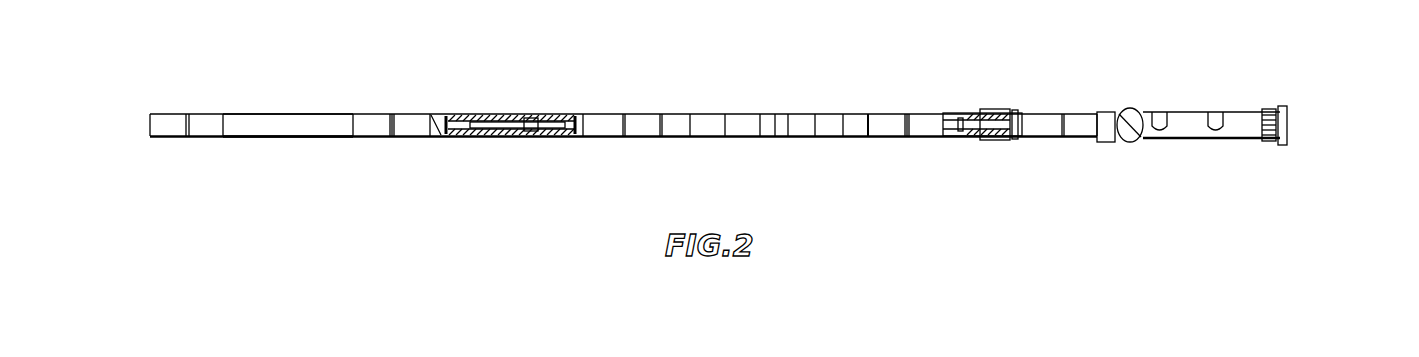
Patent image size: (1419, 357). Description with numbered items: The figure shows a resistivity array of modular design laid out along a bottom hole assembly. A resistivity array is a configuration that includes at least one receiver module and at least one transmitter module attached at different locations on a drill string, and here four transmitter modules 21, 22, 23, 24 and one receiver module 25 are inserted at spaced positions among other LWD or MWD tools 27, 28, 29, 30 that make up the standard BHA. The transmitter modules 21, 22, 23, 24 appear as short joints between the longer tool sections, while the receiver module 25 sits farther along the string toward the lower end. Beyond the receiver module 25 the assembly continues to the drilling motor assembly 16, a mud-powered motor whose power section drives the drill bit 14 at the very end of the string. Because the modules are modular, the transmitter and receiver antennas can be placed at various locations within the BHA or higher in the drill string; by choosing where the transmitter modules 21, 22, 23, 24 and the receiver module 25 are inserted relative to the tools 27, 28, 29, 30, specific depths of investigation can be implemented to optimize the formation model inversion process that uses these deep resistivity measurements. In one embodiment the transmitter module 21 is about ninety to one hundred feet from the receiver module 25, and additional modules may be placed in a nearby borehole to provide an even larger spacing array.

The drill bit 14 is at (1290, 120).
The drilling motor assembly 16 is at (1190, 110).
The transmitter module 21 is at (187, 113).
The transmitter module 22 is at (393, 113).
The transmitter module 23 is at (623, 113).
The transmitter module 24 is at (908, 113).
The receiver module 25 is at (1063, 113).
The LWD or MWD tool 27 is at (268, 138).
The LWD or MWD tool 28 is at (482, 138).
The LWD or MWD tool 29 is at (752, 137).
The LWD or MWD tool 30 is at (985, 138).